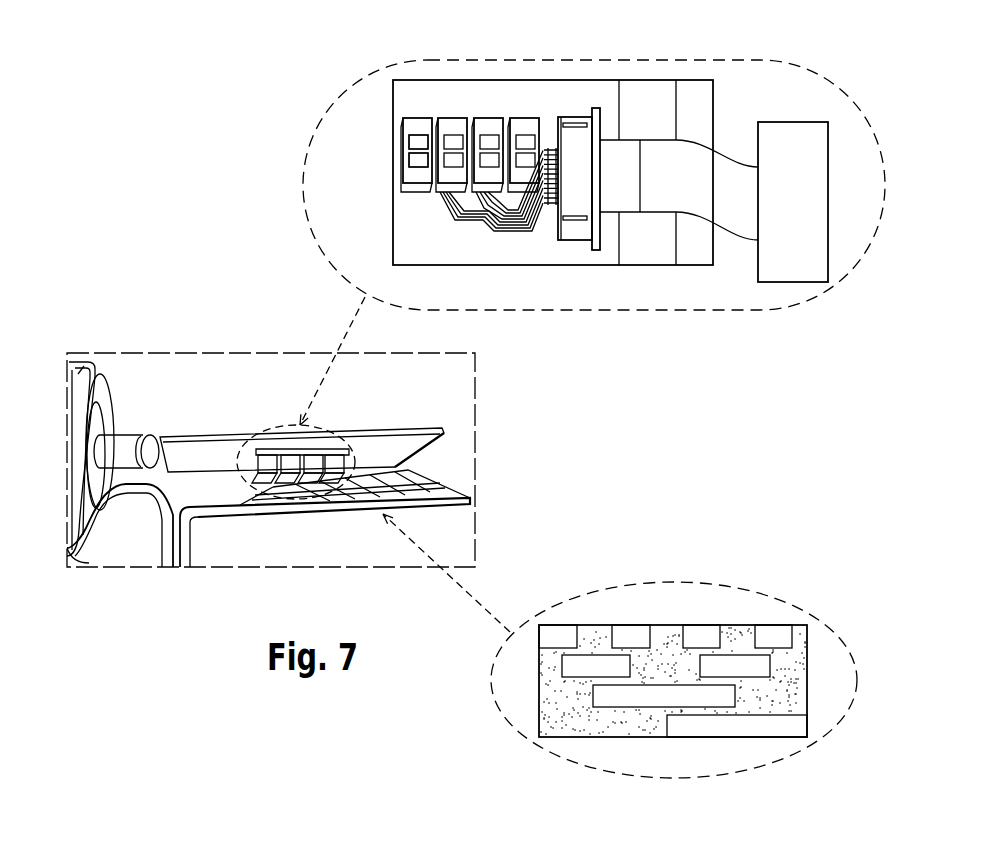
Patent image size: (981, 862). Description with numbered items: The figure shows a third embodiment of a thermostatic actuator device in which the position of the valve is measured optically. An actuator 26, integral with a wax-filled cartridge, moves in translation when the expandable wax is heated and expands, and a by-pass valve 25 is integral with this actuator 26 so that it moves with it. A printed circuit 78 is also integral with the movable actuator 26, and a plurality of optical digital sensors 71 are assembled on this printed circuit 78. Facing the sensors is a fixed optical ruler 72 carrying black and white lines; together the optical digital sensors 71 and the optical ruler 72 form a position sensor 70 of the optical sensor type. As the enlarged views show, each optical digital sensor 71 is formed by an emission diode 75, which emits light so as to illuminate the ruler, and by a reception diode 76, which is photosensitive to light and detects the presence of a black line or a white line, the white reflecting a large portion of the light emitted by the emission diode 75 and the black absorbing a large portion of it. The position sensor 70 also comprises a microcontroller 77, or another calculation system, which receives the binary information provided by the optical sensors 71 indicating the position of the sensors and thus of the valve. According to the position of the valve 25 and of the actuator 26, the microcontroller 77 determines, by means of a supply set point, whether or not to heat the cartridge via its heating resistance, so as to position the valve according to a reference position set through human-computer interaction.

The by-pass valve 25 is at (88, 360).
The actuator 26 is at (127, 425).
The position sensor 70 is at (198, 418).
The optical digital sensors 71 is at (420, 125).
The optical ruler 72 is at (426, 492).
The emission diode 75 is at (413, 158).
The reception diode 76 is at (413, 142).
The microcontroller 77 is at (786, 130).
The printed circuit 78 is at (225, 440).